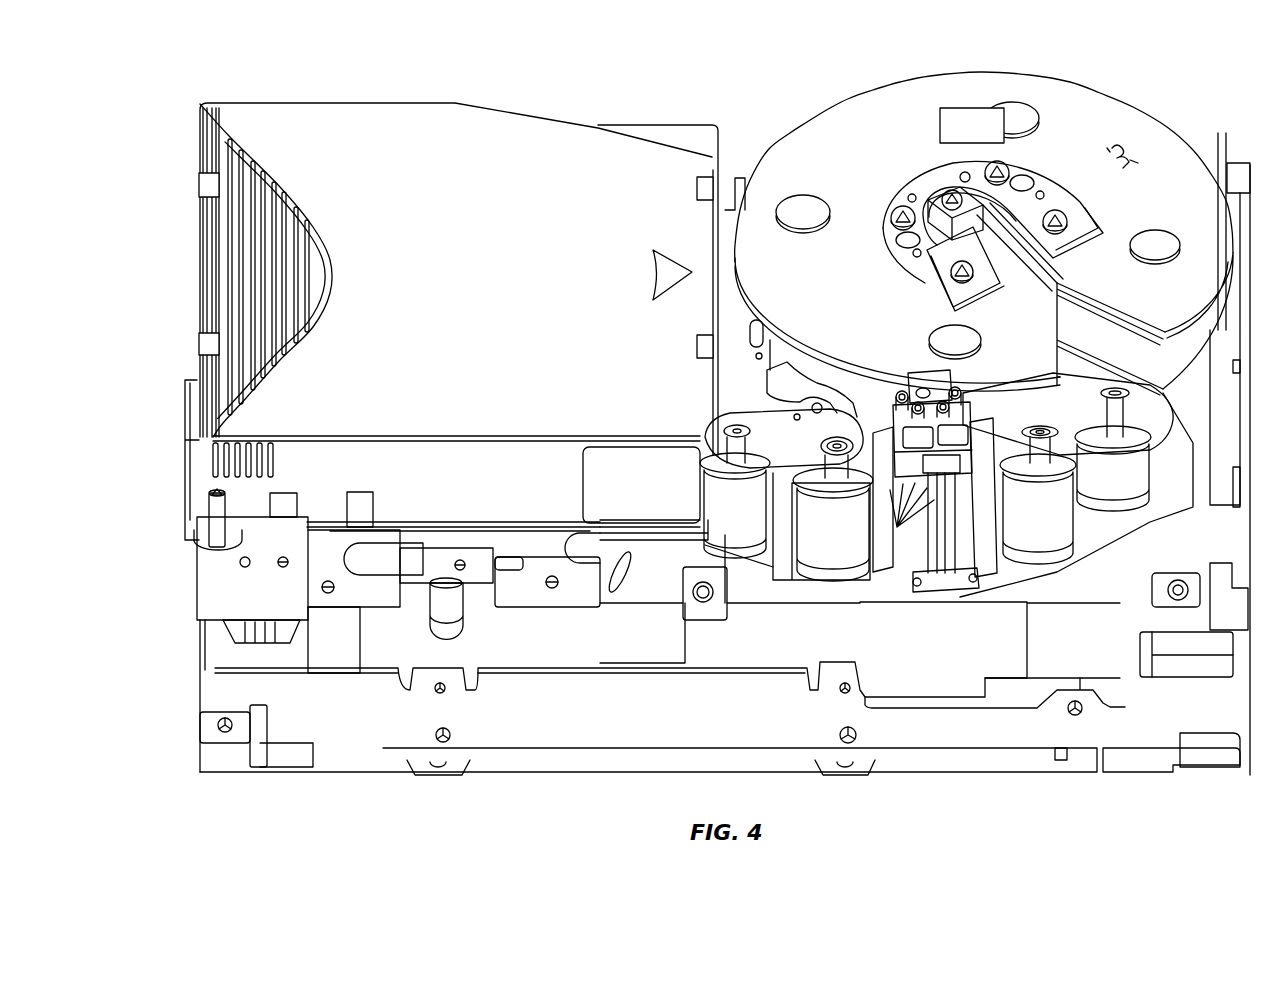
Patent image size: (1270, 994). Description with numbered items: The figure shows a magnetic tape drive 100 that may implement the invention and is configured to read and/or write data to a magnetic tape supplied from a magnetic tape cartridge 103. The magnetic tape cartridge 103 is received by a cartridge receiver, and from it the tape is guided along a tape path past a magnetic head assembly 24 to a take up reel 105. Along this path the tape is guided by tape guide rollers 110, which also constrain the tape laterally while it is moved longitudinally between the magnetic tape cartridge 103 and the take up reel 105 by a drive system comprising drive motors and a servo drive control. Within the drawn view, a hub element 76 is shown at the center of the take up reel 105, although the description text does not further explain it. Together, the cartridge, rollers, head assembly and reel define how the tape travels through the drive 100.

The magnetic tape drive 100 is at (902, 65).
The magnetic tape cartridge 103 is at (380, 103).
The take up reel 105 is at (1112, 96).
The hub 76 is at (925, 276).
The tape guide rollers 110 is at (703, 510).
The magnetic head assembly 24 is at (890, 567).